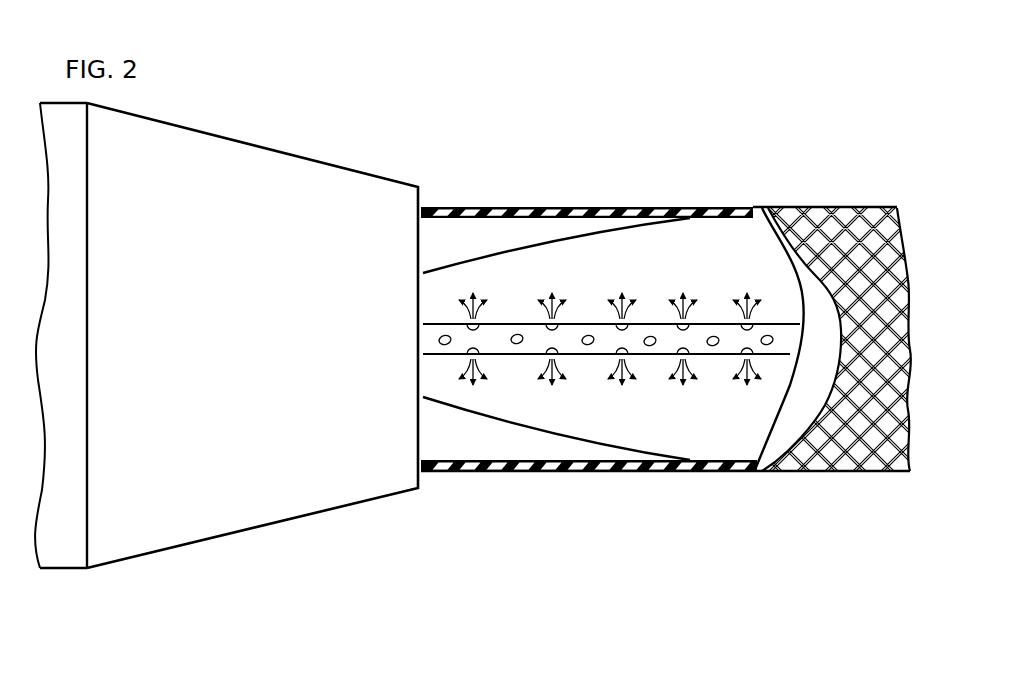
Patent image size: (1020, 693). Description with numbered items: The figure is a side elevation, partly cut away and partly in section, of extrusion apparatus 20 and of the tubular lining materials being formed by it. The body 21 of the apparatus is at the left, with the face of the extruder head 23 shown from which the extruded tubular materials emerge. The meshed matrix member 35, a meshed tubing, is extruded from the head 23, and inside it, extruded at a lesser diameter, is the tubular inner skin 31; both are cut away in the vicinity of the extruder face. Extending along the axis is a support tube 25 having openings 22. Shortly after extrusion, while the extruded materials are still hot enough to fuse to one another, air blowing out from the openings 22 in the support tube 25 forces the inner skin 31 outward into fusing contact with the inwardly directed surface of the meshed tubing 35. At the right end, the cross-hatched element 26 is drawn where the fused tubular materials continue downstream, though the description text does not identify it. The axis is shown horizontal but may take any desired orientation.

The extrusion apparatus 20 is at (387, 176).
The body 21 is at (65, 568).
The openings 22 is at (593, 334).
The extruder head 23 is at (420, 487).
The support tube 25 is at (507, 321).
The porous plug 26 is at (790, 225).
The inner skin 31 is at (788, 255).
The meshed matrix member 35 is at (577, 208).